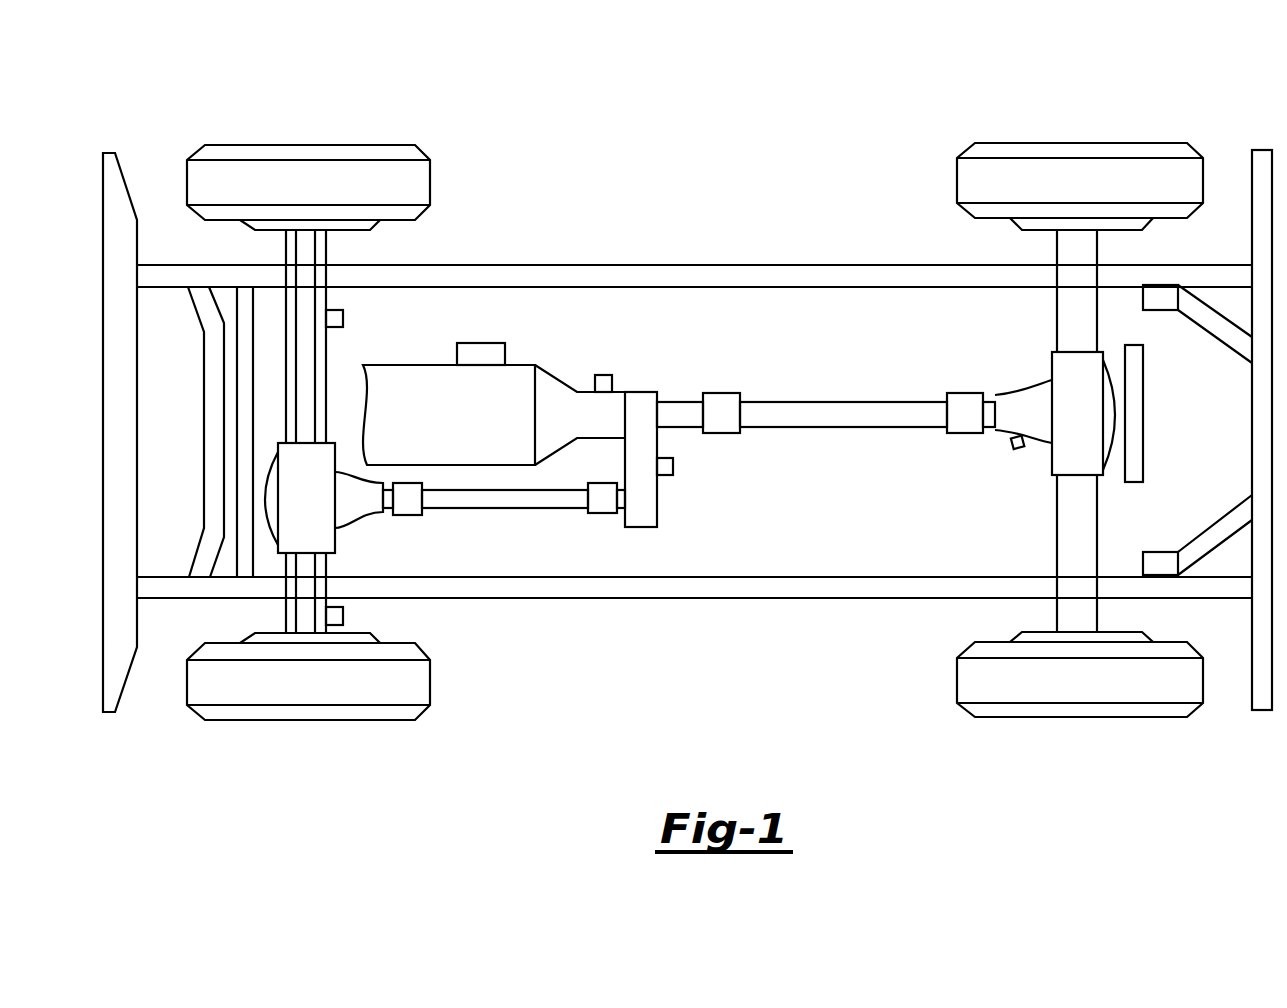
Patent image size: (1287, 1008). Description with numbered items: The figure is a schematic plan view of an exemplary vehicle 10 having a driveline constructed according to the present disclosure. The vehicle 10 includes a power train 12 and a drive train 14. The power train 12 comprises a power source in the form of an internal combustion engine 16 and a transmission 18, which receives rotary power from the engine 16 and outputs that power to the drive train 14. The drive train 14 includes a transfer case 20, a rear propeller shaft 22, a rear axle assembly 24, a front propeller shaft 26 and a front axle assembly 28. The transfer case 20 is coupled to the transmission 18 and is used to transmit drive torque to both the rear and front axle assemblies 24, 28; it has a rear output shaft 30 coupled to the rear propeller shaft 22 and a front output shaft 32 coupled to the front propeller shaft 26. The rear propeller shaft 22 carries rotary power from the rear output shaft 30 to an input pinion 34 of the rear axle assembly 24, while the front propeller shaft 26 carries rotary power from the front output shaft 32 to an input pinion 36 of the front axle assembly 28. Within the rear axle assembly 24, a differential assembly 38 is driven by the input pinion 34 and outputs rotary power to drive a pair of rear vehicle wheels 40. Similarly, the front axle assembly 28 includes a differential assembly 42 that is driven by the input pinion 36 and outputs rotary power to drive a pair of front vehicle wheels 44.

The vehicle 10 is at (815, 92).
The power train 12 is at (518, 376).
The drive train 14 is at (928, 431).
The internal combustion engine 16 is at (405, 365).
The transmission 18 is at (552, 380).
The transfer case 20 is at (643, 392).
The rear propeller shaft 22 is at (858, 427).
The rear axle assembly 24 is at (1064, 431).
The front propeller shaft 26 is at (510, 510).
The front axle assembly 28 is at (388, 431).
The rear output shaft 30 is at (688, 427).
The front output shaft 32 is at (620, 513).
The input pinion 34 is at (990, 433).
The input pinion 36 is at (388, 505).
The differential assembly 38 is at (1080, 420).
The rear vehicle wheels 40 is at (1010, 143).
The differential assembly 42 is at (295, 505).
The front vehicle wheels 44 is at (385, 145).